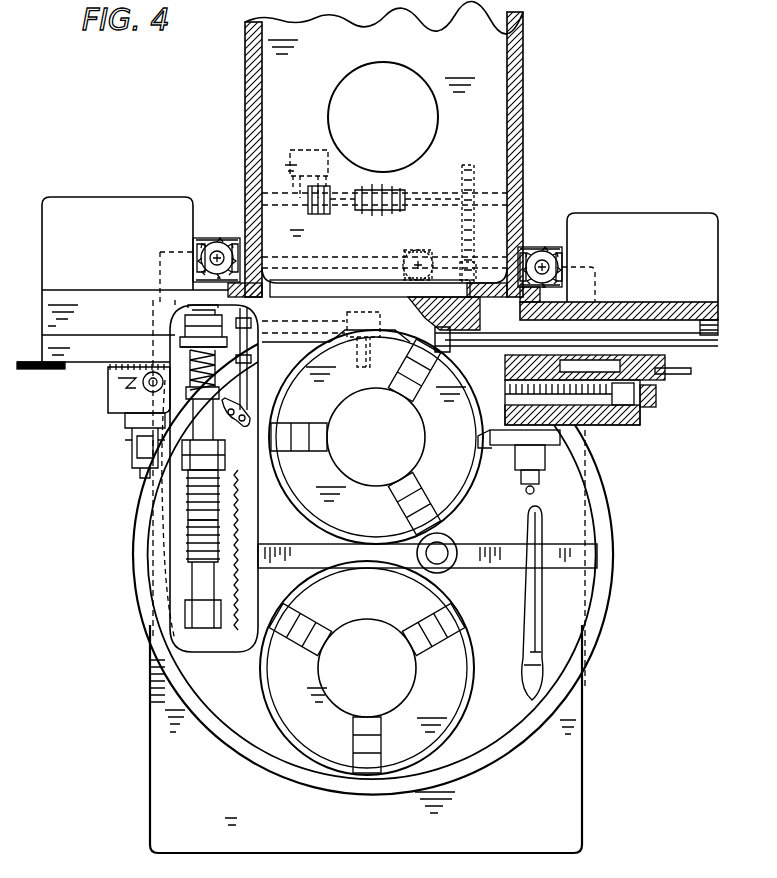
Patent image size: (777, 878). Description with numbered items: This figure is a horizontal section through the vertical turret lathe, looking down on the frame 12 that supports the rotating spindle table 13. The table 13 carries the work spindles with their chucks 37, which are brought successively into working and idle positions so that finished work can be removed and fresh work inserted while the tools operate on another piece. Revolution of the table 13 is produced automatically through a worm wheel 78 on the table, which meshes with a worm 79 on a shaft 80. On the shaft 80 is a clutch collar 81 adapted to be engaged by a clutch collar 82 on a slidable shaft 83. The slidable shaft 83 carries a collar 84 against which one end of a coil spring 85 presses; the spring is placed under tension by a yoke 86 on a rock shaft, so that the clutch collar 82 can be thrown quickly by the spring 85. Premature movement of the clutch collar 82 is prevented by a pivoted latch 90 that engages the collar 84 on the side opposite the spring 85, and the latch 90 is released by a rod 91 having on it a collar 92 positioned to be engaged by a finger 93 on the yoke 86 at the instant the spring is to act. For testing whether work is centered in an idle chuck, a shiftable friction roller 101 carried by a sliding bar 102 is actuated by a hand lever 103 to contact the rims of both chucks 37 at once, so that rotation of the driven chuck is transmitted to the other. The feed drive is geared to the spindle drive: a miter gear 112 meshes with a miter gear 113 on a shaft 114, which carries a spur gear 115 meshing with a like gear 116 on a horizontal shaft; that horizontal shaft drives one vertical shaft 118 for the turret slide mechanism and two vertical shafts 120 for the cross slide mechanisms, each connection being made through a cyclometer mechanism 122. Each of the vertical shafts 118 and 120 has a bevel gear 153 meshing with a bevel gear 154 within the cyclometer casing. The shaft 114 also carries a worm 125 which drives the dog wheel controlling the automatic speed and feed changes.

The frame 12 is at (385, 739).
The table 13 is at (608, 604).
The chuck 37 is at (371, 552).
The worm wheel 78 is at (240, 632).
The worm 79 is at (195, 570).
The shaft 80 is at (188, 525).
The clutch collar 81 is at (182, 480).
The clutch collar 82 is at (132, 440).
The slidable shaft 83 is at (110, 405).
The collar 84 is at (182, 342).
The coil spring 85 is at (195, 365).
The yoke 86 is at (200, 320).
The pivoted latch 90 is at (241, 426).
The rod 91 is at (250, 378).
The collar 92 is at (285, 338).
The finger 93 is at (285, 322).
The shiftable friction roller 101 is at (450, 545).
The sliding bar 102 is at (470, 566).
The hand lever 103 is at (528, 630).
The miter gear 112 is at (316, 192).
The miter gear 113 is at (312, 212).
The shaft 114 is at (395, 211).
The spur gear 115 is at (470, 166).
The gear 116 is at (474, 258).
The vertical shaft 118 is at (404, 262).
The vertical shaft 120 is at (215, 250).
The cyclometer mechanism 122 is at (367, 283).
The worm 125 is at (392, 192).
The bevel gear 153 is at (210, 245).
The bevel gear 154 is at (195, 250).